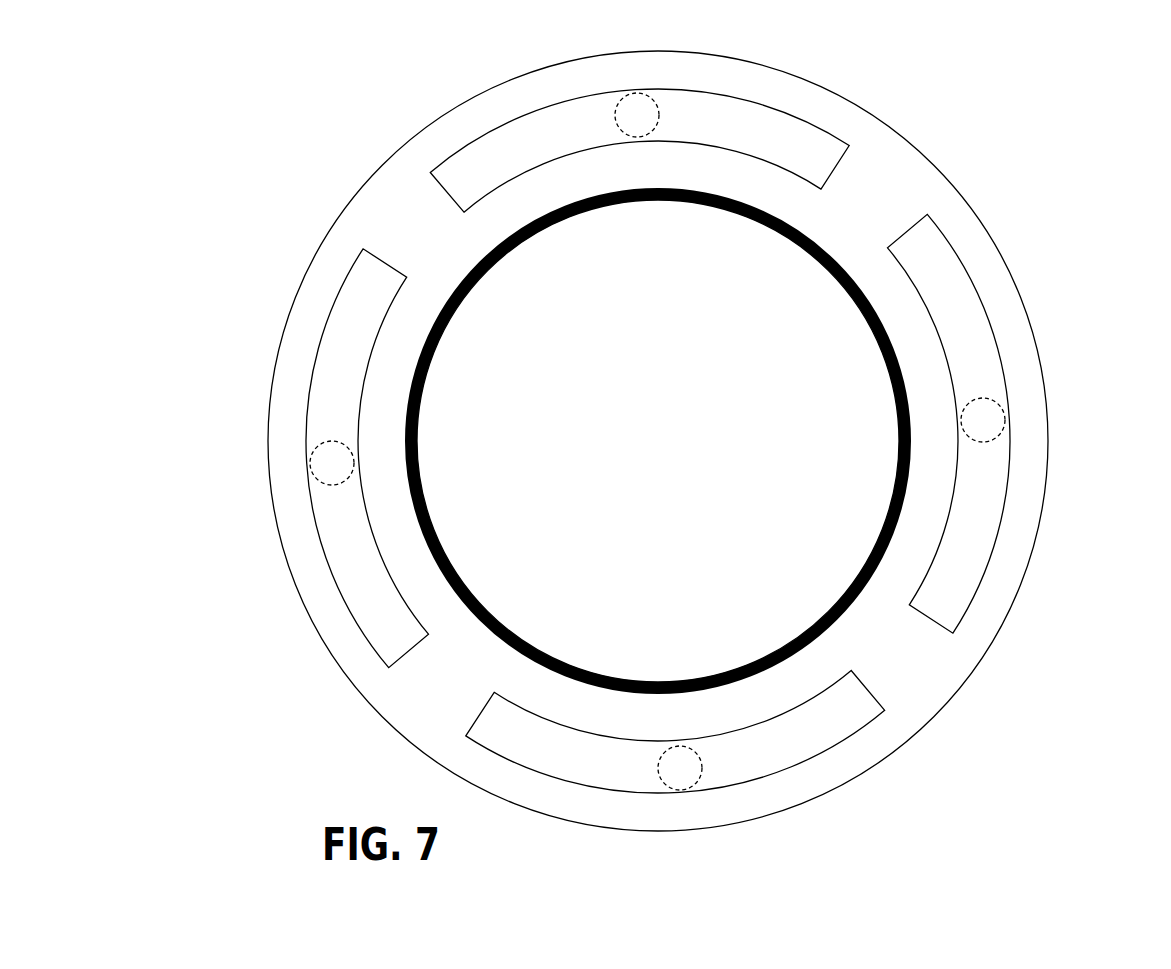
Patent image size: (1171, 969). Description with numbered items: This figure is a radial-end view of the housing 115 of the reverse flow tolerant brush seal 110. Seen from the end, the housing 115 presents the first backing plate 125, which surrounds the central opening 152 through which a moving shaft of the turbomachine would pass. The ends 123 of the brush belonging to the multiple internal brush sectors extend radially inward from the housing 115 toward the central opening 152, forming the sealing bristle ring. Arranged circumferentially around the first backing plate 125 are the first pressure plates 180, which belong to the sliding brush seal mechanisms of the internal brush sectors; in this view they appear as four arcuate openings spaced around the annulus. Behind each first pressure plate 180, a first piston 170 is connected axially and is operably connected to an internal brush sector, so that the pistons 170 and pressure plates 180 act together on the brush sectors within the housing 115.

The reverse flow tolerant brush seal 110 is at (1030, 75).
The housing 115 is at (953, 182).
The ends of the brush 123 is at (725, 207).
The first backing plate 125 is at (1008, 343).
The central opening 152 is at (818, 482).
The first piston 170 is at (656, 102).
The first pressure plate 180 is at (803, 117).